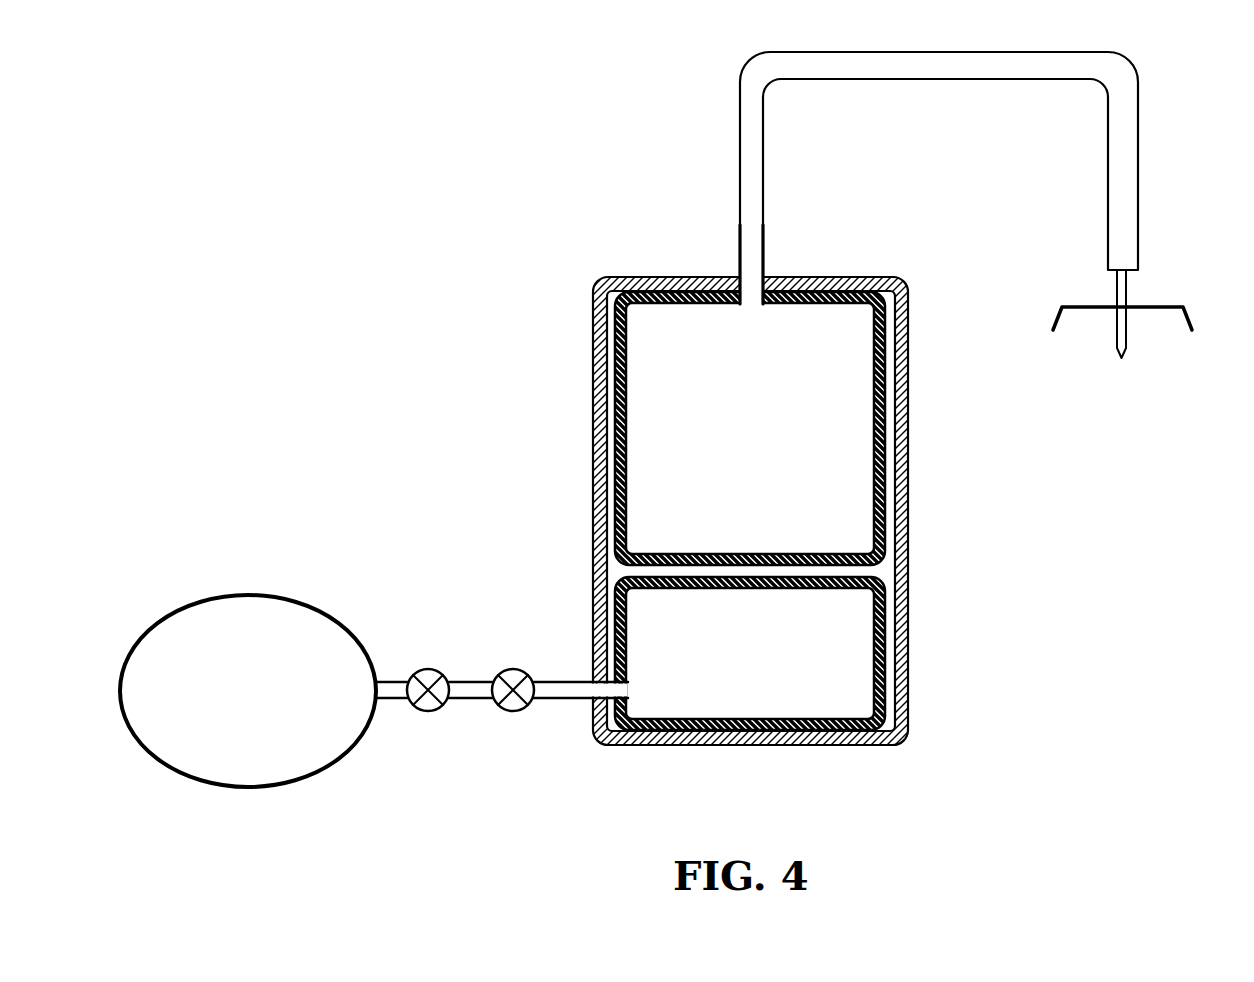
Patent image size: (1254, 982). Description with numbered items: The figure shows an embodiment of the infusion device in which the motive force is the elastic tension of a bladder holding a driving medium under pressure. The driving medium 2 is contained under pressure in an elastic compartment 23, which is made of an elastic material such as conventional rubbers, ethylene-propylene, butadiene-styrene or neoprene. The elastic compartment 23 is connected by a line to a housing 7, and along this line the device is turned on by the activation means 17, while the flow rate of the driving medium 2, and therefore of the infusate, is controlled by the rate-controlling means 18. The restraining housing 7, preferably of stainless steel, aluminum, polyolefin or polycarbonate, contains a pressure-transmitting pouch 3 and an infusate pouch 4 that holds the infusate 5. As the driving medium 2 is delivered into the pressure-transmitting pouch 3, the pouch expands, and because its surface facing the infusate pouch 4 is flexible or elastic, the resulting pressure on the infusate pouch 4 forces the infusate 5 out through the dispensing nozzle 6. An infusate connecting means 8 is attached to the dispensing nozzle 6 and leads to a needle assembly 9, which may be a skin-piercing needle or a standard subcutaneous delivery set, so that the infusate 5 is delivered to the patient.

The driving medium 2 is at (315, 642).
The pressure-transmitting pouch 3 is at (882, 612).
The infusate pouch 4 is at (882, 458).
The infusate 5 is at (815, 388).
The dispensing nozzle 6 is at (765, 258).
The housing 7 is at (600, 283).
The infusate connecting means 8 is at (740, 152).
The needle assembly 9 is at (1160, 287).
The activation means 17 is at (428, 711).
The rate-controlling means 18 is at (513, 711).
The elastic compartment 23 is at (260, 585).